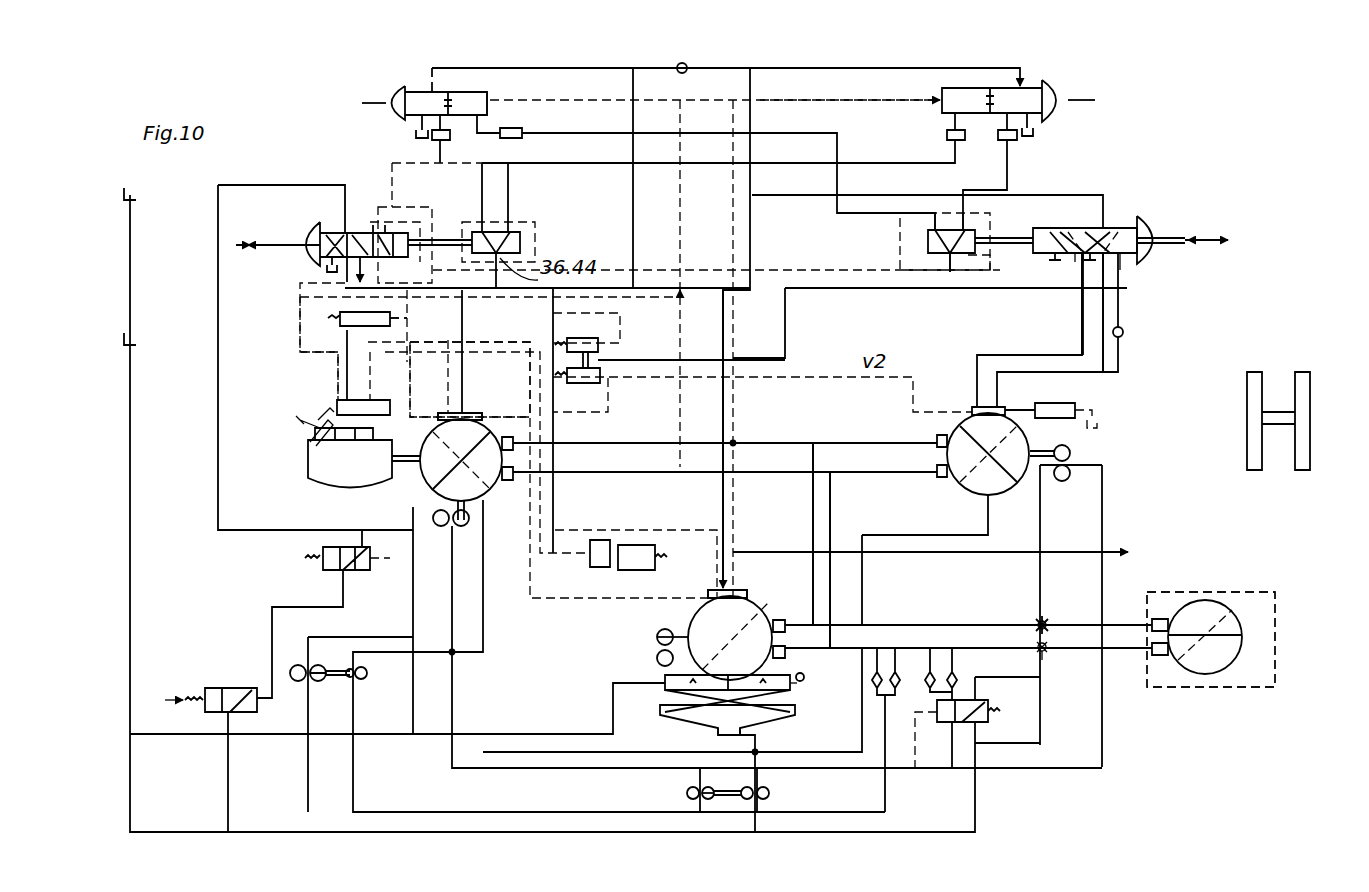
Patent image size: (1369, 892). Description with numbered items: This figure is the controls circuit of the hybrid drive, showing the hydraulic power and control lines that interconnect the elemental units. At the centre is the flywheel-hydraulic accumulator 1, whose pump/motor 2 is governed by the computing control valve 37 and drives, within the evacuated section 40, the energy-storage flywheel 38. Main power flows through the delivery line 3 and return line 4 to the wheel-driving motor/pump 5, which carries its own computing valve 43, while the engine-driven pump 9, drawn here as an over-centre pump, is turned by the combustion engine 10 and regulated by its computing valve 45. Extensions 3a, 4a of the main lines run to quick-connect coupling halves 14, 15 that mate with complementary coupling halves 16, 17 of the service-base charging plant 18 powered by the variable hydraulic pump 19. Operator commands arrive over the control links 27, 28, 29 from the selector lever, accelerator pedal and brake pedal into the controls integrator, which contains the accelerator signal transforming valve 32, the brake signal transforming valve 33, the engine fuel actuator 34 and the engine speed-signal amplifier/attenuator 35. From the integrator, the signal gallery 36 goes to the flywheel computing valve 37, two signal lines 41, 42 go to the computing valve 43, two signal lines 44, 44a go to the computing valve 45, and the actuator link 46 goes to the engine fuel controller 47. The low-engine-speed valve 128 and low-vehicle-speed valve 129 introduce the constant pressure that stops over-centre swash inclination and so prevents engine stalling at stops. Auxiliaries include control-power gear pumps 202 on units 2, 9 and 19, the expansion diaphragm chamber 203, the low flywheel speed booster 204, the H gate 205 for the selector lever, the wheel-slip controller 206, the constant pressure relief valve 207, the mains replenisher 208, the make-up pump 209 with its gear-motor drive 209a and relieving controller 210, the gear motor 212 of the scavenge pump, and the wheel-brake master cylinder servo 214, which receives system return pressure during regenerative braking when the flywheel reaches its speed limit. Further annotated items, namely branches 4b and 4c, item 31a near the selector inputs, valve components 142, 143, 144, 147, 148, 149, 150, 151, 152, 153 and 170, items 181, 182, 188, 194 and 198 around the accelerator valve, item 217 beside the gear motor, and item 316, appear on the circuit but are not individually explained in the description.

The flywheel-hydraulic accumulator 1 is at (760, 674).
The pump/motor 2 is at (757, 636).
The delivery line 3 is at (832, 510).
The extension of delivery line 3a is at (978, 660).
The return line 4 is at (762, 445).
The extension of return line 4a is at (998, 626).
The line 4b is at (862, 100).
The line 4c is at (735, 550).
The motor/pump 5 is at (975, 478).
The engine-driven pump 9 is at (432, 468).
The combustion engine 10 is at (364, 464).
The coupling half 14 is at (1042, 660).
The coupling half 15 is at (1042, 621).
The complementary coupling half 16 is at (1050, 648).
The complementary coupling half 17 is at (1050, 626).
The service-base hydraulic charging plant 18 is at (1256, 686).
The variable hydraulic pump 19 is at (1210, 616).
The control line or link 27 is at (1200, 245).
The control line or link 28 is at (374, 100).
The control line or link 29 is at (1085, 100).
The control valve knob 31a is at (1132, 235).
The accelerator signal transforming valve 32 is at (405, 88).
The brake signal transforming valve 33 is at (1040, 98).
The engine fuel actuator 34 is at (337, 408).
The engine speed-signal amplifier/attenuator 35 is at (352, 316).
The output signal line or gallery 36 is at (723, 335).
The computing control valve 37 is at (748, 596).
The energy-storage flywheel 38 is at (770, 712).
The evacuated section 40 is at (796, 698).
The output signal line 41 is at (1082, 345).
The output signal line 42 is at (1083, 372).
The computing valve 43 is at (972, 407).
The output signal line 44 is at (462, 375).
The output signal line 44a is at (340, 368).
The computing valve 45 is at (466, 416).
The output actuator line or mechanical link 46 is at (300, 428).
The engine carburettor or fuel controller 47 is at (312, 440).
The low-engine-speed valve 128 is at (590, 338).
The low-vehicle-speed valve 129 is at (590, 383).
The passage 142 is at (1100, 262).
The valve 143 is at (1095, 238).
The passage 144 is at (1120, 255).
The passage 147 is at (1075, 255).
The passage 148 is at (1070, 240).
The passage 149 is at (1000, 270).
The passage 150 is at (935, 235).
The passage 151 is at (960, 255).
The passage 152 is at (962, 238).
The valve 153 is at (925, 240).
The valve 170 is at (522, 245).
The line 181 is at (442, 90).
The orifice 182 is at (468, 143).
The drain 188 is at (420, 136).
The orifice 194 is at (500, 128).
The valve section 198 is at (492, 100).
The control-power gear-pump 202 is at (440, 527).
The expansion diaphragm chamber 203 is at (820, 678).
The low flywheel speed booster 204 is at (640, 568).
The H gate 205 is at (1250, 440).
The wheel-slip controller 206 is at (1080, 408).
The constant pressure relief valve 207 is at (325, 565).
The sub-constant mains replenisher 208 is at (975, 714).
The closed circuit make-up pump 209 is at (298, 665).
The gear-motor drive 209a is at (362, 679).
The relieving controller 210 is at (228, 688).
The gear motor 212 is at (686, 793).
The wheel-brake master cylinder servo 214 is at (978, 553).
The gear 217 is at (769, 793).
The valve 316 is at (326, 232).